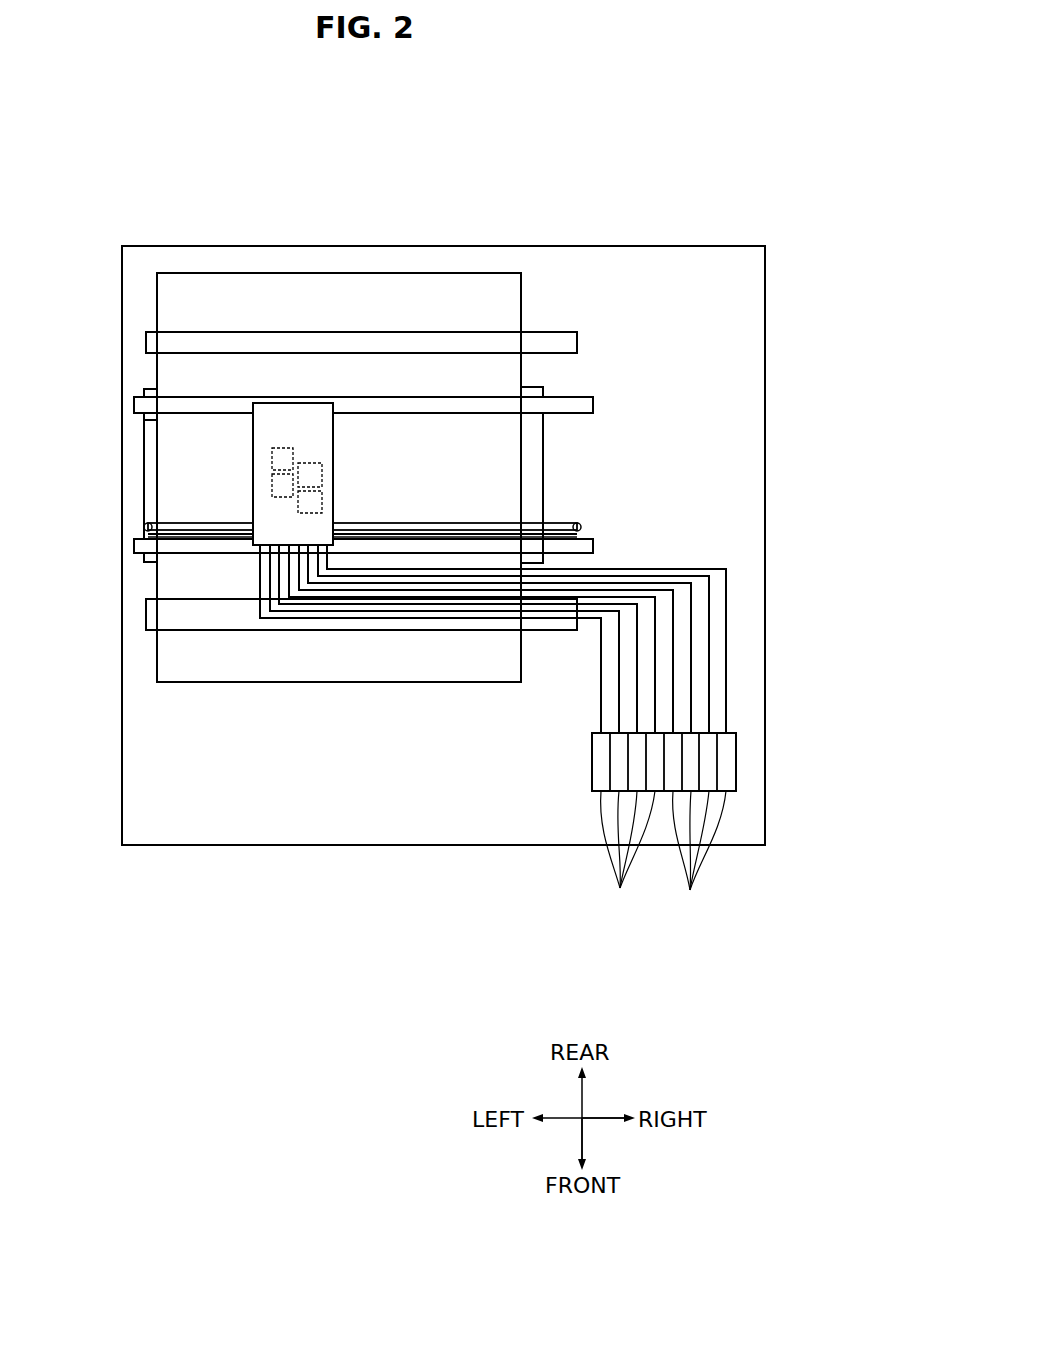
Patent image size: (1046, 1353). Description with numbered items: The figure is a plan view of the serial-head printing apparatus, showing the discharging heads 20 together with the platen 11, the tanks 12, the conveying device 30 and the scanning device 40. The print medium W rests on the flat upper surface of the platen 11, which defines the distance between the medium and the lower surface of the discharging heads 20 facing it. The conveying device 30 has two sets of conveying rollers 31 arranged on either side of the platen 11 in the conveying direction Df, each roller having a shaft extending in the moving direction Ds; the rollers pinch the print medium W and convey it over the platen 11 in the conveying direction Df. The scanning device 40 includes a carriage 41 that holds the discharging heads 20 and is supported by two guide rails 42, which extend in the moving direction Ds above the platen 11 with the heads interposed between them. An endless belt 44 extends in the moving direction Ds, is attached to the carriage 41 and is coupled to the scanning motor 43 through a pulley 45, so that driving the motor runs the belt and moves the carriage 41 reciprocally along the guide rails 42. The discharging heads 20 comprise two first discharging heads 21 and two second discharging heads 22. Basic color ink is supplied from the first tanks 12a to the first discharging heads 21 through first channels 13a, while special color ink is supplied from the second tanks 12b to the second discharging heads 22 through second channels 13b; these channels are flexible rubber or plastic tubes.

The tank 12 is at (737, 848).
The first tank 12a is at (698, 858).
The second tank 12b is at (626, 858).
The first channel 13a is at (677, 657).
The second channel 13b is at (602, 722).
The platen 11 is at (147, 388).
The print medium W is at (364, 292).
The conveying device 30 is at (312, 401).
The conveying roller 31 is at (188, 342).
The scanning device 40 is at (319, 352).
The carriage 41 is at (276, 420).
The guide rail 42 is at (135, 412).
The scanning motor 43 is at (580, 528).
The endless belt 44 is at (585, 520).
The pulley 45 is at (580, 530).
The discharging head 20 is at (304, 475).
The first discharging head 21 is at (273, 460).
The second discharging head 22 is at (273, 488).
The moving direction Ds is at (603, 1113).
The conveying direction Df is at (578, 1138).